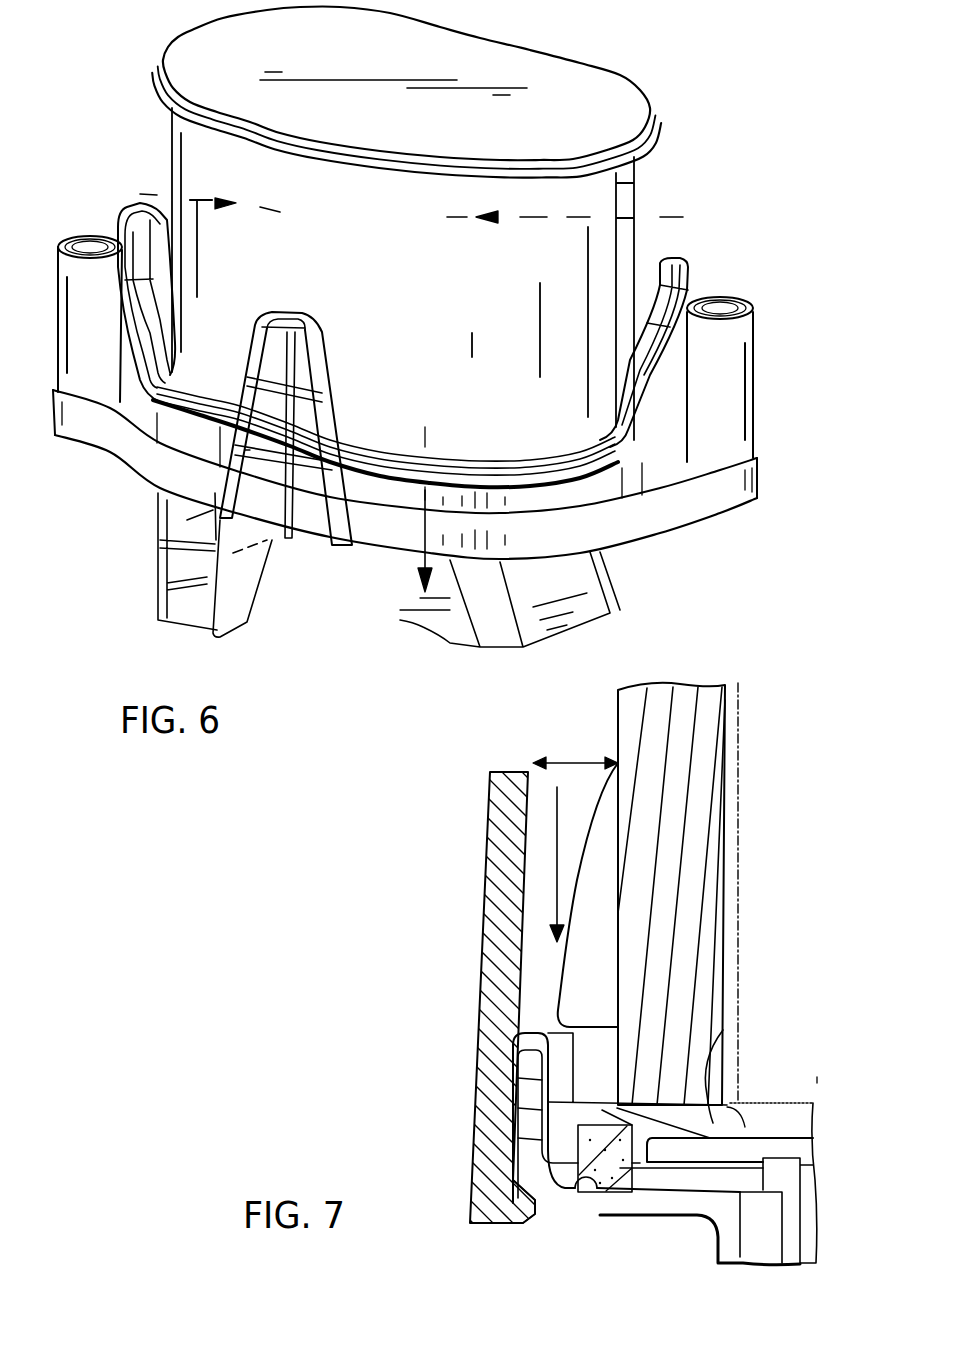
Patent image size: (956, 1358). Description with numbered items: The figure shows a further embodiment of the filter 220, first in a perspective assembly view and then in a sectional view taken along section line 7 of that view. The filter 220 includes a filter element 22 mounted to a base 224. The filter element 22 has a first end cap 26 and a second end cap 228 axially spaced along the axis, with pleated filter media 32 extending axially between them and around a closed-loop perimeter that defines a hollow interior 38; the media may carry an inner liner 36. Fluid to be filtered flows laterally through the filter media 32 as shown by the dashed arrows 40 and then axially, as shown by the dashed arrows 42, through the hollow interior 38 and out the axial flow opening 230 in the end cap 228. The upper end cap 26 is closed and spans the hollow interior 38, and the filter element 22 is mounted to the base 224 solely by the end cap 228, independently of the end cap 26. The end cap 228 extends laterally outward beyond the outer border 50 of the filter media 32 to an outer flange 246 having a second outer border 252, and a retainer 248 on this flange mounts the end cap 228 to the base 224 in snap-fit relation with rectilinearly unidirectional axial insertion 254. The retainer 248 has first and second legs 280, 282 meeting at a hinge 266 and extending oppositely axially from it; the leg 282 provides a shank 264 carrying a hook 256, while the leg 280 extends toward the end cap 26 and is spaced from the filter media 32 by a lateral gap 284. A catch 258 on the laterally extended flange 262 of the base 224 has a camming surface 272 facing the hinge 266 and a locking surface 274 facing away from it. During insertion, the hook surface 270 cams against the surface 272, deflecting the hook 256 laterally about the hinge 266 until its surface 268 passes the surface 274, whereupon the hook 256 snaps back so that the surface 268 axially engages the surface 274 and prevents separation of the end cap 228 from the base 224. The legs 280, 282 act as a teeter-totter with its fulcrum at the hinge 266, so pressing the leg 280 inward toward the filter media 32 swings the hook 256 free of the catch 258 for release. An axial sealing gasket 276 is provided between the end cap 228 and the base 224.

In FIG. 6, the filter element 22 is at (617, 183).
In FIG. 6, the first end cap 26 is at (653, 110).
In FIG. 7, the filter media 32 is at (683, 692).
In FIG. 7, the inner liner 36 is at (738, 737).
In FIG. 7, the hollow interior 38 is at (790, 908).
In FIG. 6, the dashed line arrows 40 is at (113, 190).
In FIG. 6, the dashed arrows 42 is at (438, 264).
In FIG. 6, the outer border 50 is at (170, 113).
In FIG. 7, the outer border 50 is at (618, 720).
In FIG. 6, the filter 220 is at (135, 146).
In FIG. 6, the base 224 is at (607, 577).
In FIG. 7, the base 224 is at (718, 1250).
In FIG. 6, the second end cap 228 is at (473, 470).
In FIG. 7, the second end cap 228 is at (722, 1045).
In FIG. 7, the axial flow opening 230 is at (747, 1127).
In FIG. 7, the outer flange 246 is at (570, 1090).
In FIG. 7, the retainer 248 is at (480, 1042).
In FIG. 7, the second outer border 252 is at (547, 1143).
In FIG. 7, the axial insertion 254 is at (557, 830).
In FIG. 7, the hook 256 is at (500, 1215).
In FIG. 7, the catch 258 is at (530, 1180).
In FIG. 7, the laterally extended flange 262 is at (617, 1203).
In FIG. 7, the shank 264 is at (483, 1127).
In FIG. 6, the hinge 266 is at (340, 437).
In FIG. 7, the hinge 266 is at (477, 1000).
In FIG. 7, the axially facing surface of hook 268 is at (520, 1218).
In FIG. 7, the axially facing surface of hook 270 is at (527, 1217).
In FIG. 7, the camming surface 272 is at (517, 1080).
In FIG. 7, the locking surface 274 is at (517, 1212).
In FIG. 7, the axial sealing gasket 276 is at (630, 1167).
In FIG. 6, the first leg 280 is at (320, 358).
In FIG. 7, the first leg 280 is at (498, 840).
In FIG. 6, the second leg 282 is at (333, 487).
In FIG. 7, the second leg 282 is at (483, 1090).
In FIG. 7, the lateral gap 284 is at (572, 735).
In FIG. 6, the section line 7 is at (380, 492).